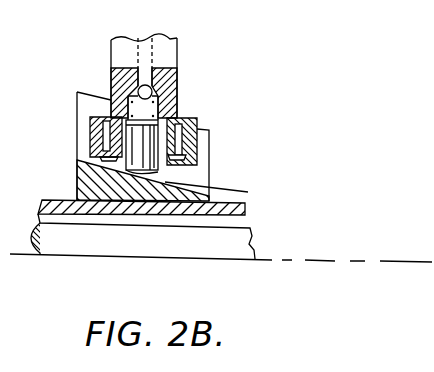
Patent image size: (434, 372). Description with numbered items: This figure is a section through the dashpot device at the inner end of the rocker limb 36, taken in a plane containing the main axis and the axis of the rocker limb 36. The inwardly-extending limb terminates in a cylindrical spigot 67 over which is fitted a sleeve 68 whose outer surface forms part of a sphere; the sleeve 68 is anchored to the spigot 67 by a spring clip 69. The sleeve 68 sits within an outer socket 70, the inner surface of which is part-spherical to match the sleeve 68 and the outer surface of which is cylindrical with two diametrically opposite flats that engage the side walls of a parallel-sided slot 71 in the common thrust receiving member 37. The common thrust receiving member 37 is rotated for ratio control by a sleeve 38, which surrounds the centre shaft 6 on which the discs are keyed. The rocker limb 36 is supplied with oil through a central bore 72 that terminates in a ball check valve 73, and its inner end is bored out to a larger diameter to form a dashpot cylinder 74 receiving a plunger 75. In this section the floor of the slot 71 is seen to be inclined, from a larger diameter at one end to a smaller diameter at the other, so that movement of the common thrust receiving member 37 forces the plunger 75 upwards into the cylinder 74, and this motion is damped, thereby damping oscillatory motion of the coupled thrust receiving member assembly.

The centre shaft 6 is at (79, 254).
The rocker limb 36 is at (121, 47).
The common thrust receiving member 37 is at (82, 175).
The sleeve 38 is at (56, 200).
The cylindrical spigot 67 is at (118, 132).
The sleeve 68 is at (110, 140).
The spring clip 69 is at (160, 173).
The outer socket 70 is at (192, 143).
The parallel-sided slot 71 is at (220, 195).
The central bore 72 is at (159, 42).
The ball check valve 73 is at (152, 89).
The dashpot cylinder 74 is at (168, 97).
The plunger 75 is at (172, 111).